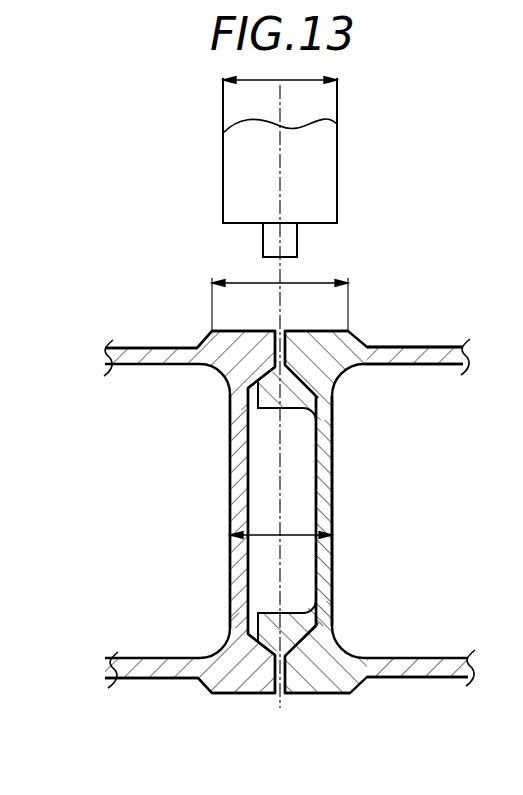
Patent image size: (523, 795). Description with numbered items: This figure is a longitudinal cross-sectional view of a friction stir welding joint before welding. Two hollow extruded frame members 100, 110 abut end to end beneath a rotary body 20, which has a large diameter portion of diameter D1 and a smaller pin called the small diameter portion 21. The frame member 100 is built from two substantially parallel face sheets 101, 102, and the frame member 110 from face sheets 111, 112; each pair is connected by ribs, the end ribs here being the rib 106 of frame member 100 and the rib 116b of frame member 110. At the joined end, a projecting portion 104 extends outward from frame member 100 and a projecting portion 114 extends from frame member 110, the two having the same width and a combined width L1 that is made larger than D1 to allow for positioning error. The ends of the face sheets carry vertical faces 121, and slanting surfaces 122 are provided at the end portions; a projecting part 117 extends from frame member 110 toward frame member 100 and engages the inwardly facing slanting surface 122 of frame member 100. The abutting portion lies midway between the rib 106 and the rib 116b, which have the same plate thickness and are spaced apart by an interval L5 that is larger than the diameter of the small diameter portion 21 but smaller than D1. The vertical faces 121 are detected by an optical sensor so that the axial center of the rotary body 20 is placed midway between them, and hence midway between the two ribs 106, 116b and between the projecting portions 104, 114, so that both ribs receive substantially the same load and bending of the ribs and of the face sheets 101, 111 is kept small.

The rotary body 20 is at (328, 161).
The small diameter portion 21 is at (297, 241).
The extruded frame member 100 is at (97, 303).
The face sheet 101 is at (133, 348).
The face sheet 102 is at (134, 680).
The projecting portion 104 is at (205, 330).
The rib 106 is at (230, 490).
The extruded frame member 110 is at (430, 270).
The face sheet 111 is at (435, 346).
The face sheet 112 is at (403, 678).
The projecting portion 114 is at (340, 330).
The rib 116b is at (333, 575).
The projecting part 117 is at (252, 428).
The vertical face 121 is at (273, 330).
The slanting surface 122 is at (231, 376).